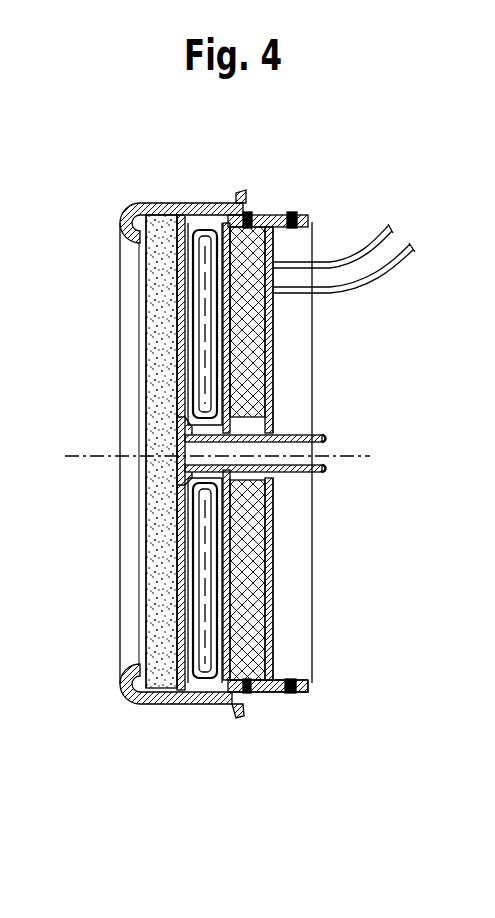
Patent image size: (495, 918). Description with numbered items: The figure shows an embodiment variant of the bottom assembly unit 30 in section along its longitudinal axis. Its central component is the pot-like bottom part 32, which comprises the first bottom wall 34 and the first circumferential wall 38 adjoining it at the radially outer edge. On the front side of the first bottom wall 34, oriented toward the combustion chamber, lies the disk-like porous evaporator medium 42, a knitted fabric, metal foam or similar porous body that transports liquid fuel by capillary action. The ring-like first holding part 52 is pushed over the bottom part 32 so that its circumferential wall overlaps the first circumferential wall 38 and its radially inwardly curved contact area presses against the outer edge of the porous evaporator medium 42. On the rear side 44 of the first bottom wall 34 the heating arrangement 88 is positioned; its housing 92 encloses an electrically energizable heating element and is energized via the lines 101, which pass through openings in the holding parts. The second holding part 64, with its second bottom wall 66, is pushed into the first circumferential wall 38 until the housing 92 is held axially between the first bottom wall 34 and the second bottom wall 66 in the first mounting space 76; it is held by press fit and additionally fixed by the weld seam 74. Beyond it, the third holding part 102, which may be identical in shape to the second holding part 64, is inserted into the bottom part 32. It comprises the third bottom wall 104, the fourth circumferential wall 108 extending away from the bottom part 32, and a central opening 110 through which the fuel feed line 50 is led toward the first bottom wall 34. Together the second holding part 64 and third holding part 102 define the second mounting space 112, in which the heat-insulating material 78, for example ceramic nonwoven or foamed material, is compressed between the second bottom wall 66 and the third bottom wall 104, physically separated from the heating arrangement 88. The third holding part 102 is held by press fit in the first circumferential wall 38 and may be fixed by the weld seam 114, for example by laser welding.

The bottom assembly unit 30 is at (108, 703).
The first holding part 52 is at (165, 203).
The bottom part 32 is at (176, 307).
The first bottom wall 34 is at (182, 352).
The heating arrangement 88 is at (192, 262).
The first mounting space 76 is at (194, 410).
The rear side 44 is at (238, 323).
The second holding part 64 is at (232, 310).
The third bottom wall 104 is at (275, 369).
The opening 110 is at (274, 431).
The third holding part 102 is at (273, 538).
The heat-insulating material 78 is at (240, 575).
The second bottom wall 66 is at (217, 597).
The second mounting space 112 is at (222, 513).
The porous evaporator medium 42 is at (157, 487).
The fuel feed line 50 is at (322, 471).
The first circumferential wall 38 is at (277, 214).
The weld seam 74 is at (246, 212).
The weld seam 114 is at (297, 213).
The fourth circumferential wall 108 is at (308, 690).
The housing 92 is at (197, 697).
The lines 101 is at (398, 238).